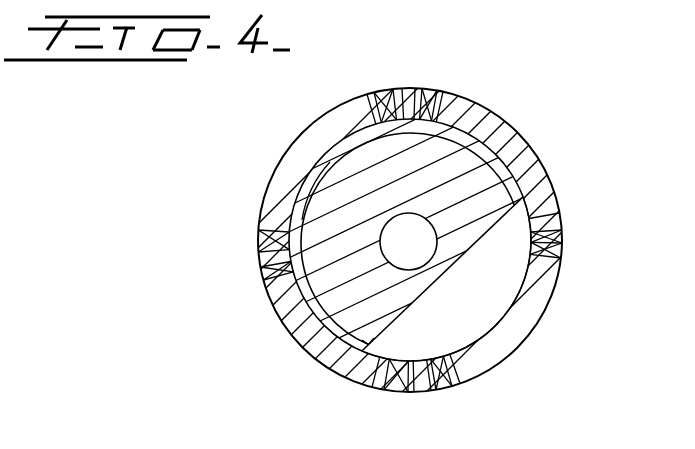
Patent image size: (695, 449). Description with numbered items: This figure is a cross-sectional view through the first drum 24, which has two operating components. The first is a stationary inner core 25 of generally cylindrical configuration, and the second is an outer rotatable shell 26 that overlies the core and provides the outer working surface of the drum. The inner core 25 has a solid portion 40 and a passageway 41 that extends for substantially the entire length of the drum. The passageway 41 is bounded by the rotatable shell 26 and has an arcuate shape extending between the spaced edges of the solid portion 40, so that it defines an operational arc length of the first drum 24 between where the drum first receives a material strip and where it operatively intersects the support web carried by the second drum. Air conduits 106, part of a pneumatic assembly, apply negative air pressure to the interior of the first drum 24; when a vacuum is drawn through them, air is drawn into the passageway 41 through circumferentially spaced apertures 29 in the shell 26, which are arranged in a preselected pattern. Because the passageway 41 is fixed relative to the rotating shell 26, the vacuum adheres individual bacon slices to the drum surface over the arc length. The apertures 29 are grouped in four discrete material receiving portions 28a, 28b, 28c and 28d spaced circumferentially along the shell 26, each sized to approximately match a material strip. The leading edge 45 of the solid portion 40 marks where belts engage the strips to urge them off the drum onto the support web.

The first drum 24 is at (288, 121).
The stationary inner core 25 is at (440, 148).
The outer rotatable shell 26 is at (513, 147).
The discrete material receiving portion 28a is at (560, 213).
The discrete material receiving portion 28b is at (445, 390).
The discrete material receiving portion 28c is at (261, 283).
The discrete material receiving portion 28d is at (402, 89).
The apertures 29 is at (444, 89).
The solid portion 40 is at (327, 197).
The passageway 41 is at (503, 258).
The leading edge 45 is at (372, 388).
The air conduits 106 is at (427, 256).